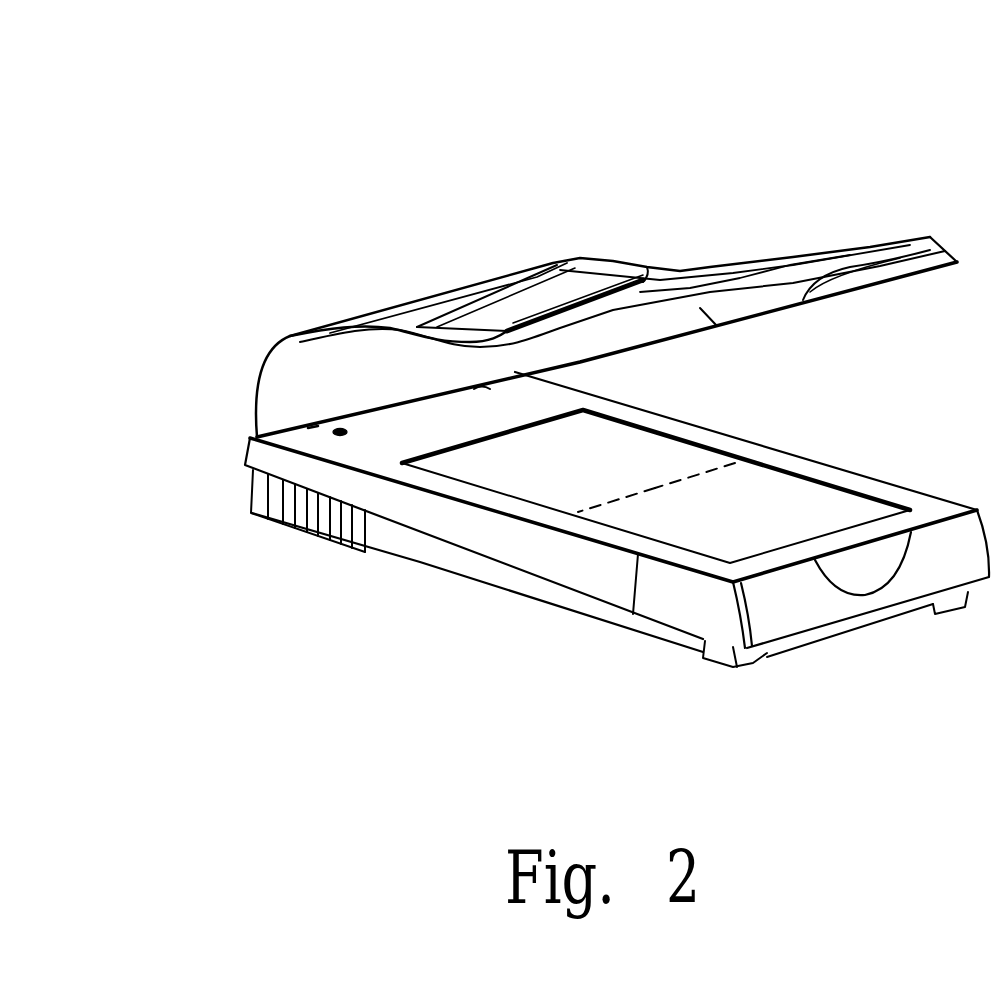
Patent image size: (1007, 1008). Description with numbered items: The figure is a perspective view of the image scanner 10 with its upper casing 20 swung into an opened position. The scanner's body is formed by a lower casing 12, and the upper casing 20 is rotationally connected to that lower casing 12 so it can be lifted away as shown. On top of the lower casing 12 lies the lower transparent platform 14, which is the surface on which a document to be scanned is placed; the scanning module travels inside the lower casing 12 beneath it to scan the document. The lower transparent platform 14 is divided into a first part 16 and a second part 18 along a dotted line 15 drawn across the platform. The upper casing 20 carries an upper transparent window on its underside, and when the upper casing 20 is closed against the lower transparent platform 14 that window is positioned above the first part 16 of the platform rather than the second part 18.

The image scanner 10 is at (532, 393).
The lower casing 12 is at (355, 491).
The lower transparent platform 14 is at (700, 466).
The dotted line 15 is at (622, 505).
The first part 16 is at (768, 540).
The second part 18 is at (607, 492).
The upper casing 20 is at (297, 378).